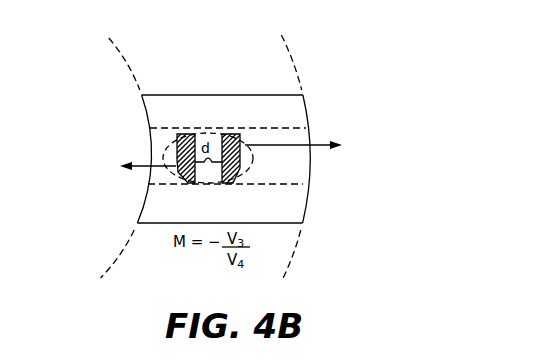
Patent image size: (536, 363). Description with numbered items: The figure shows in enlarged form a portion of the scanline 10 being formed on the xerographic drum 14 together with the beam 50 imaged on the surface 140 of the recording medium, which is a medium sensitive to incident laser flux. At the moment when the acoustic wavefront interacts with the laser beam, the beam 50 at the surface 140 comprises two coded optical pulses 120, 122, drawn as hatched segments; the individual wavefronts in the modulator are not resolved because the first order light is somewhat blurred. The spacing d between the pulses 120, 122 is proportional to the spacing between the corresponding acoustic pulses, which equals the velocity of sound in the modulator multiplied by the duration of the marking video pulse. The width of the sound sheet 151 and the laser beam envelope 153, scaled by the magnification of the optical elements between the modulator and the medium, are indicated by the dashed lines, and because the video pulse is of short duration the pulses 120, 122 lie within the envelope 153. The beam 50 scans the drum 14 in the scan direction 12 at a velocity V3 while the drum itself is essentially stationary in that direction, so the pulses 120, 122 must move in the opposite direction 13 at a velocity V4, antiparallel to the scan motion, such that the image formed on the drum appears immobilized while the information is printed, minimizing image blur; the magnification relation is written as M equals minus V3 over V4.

The scanline 10 is at (253, 128).
The xerographic drum 14 is at (303, 95).
The surface of recording medium 140 is at (303, 207).
The sound sheet 151 is at (153, 128).
The laser beam envelope 153 is at (172, 184).
The beam 50 is at (155, 147).
The coded optical pulse 120 is at (181, 132).
The coded optical pulse 122 is at (227, 133).
The scan direction 12 is at (322, 148).
The direction of pulse motion 13 is at (119, 168).